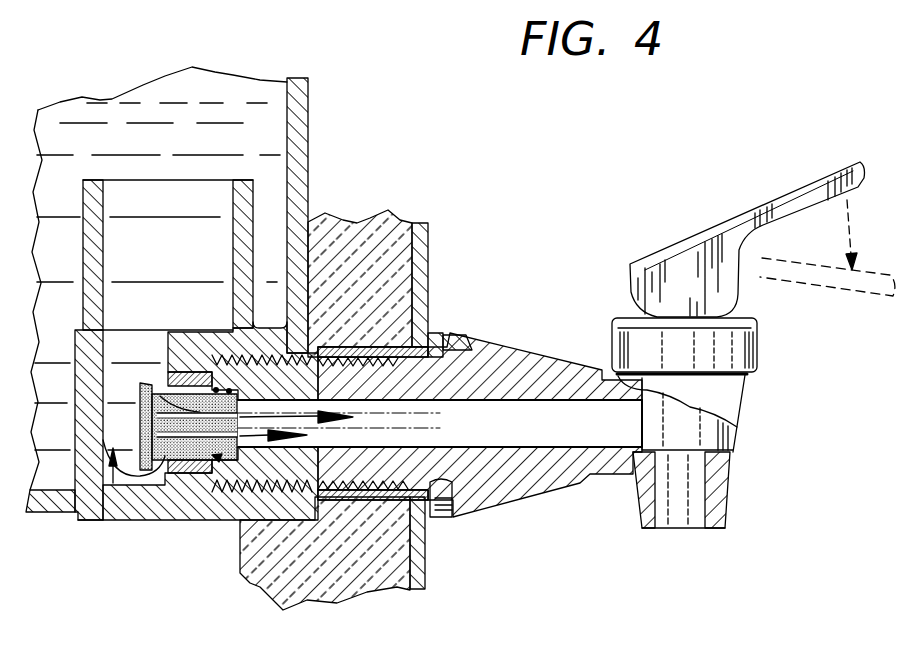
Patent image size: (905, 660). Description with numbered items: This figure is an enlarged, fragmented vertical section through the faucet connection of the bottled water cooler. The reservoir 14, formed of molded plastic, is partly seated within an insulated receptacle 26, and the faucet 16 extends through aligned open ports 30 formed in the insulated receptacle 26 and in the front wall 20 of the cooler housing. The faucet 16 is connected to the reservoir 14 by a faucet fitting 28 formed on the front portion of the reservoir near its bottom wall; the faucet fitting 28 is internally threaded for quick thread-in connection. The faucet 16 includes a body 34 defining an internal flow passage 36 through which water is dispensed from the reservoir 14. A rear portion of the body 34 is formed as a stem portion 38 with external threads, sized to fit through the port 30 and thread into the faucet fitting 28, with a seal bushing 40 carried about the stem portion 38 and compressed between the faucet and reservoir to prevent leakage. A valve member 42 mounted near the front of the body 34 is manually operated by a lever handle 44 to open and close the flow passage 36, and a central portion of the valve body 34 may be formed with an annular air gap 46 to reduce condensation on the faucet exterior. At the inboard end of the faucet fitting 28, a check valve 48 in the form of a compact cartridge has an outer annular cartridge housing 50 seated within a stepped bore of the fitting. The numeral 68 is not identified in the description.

The reservoir 14 is at (310, 107).
The faucet 16 is at (757, 418).
The front wall 20 is at (430, 247).
The insulated receptacle 26 is at (366, 224).
The faucet fitting 28 is at (240, 500).
The open port 30 is at (441, 518).
The body 34 is at (533, 363).
The flow passage 36 is at (593, 437).
The stem portion 38 is at (487, 470).
The seal bushing 40 is at (400, 356).
The valve member 42 is at (703, 437).
The lever handle 44 is at (758, 232).
The annular air gap 46 is at (447, 342).
The check valve 48 is at (113, 455).
The cartridge housing 50 is at (192, 477).
The flow channel 68 is at (152, 430).